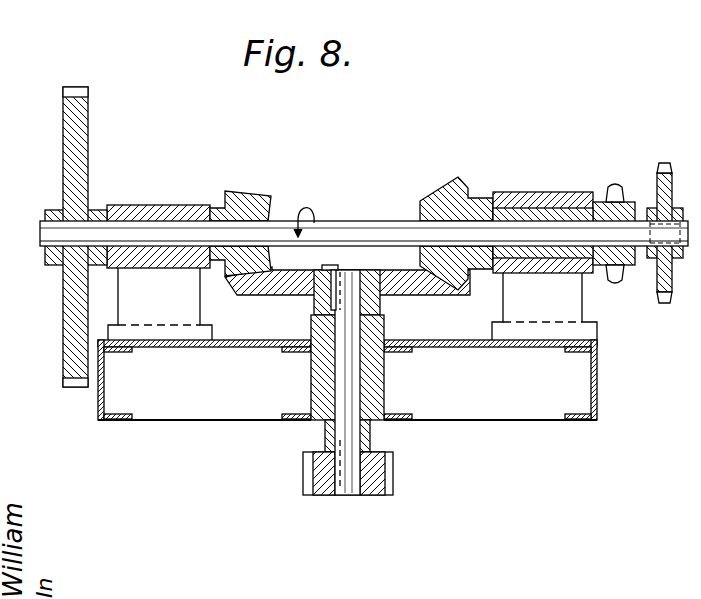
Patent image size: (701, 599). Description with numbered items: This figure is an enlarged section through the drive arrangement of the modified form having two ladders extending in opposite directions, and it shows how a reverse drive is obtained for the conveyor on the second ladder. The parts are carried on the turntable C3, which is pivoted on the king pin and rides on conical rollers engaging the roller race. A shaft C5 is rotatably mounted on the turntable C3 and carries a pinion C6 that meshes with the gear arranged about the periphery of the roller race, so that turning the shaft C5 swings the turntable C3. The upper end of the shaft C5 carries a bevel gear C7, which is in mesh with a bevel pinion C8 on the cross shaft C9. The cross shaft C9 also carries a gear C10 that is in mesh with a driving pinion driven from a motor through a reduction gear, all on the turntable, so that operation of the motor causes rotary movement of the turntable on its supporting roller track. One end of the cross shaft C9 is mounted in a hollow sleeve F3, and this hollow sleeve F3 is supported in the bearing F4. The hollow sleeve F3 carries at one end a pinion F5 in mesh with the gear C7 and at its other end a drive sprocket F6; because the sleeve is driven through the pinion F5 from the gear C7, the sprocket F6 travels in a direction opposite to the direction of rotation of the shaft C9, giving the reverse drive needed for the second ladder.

The gear C10 is at (76, 90).
The bevel pinion C8 is at (238, 190).
The cross shaft C9 is at (329, 228).
The bevel gear C7 is at (400, 280).
The turntable C3 is at (250, 340).
The pinion C6 is at (391, 472).
The shaft C5 is at (352, 496).
The pinion F5 is at (440, 188).
The hollow sleeve F3 is at (520, 213).
The bearing F4 is at (568, 200).
The drive sprocket F6 is at (617, 185).